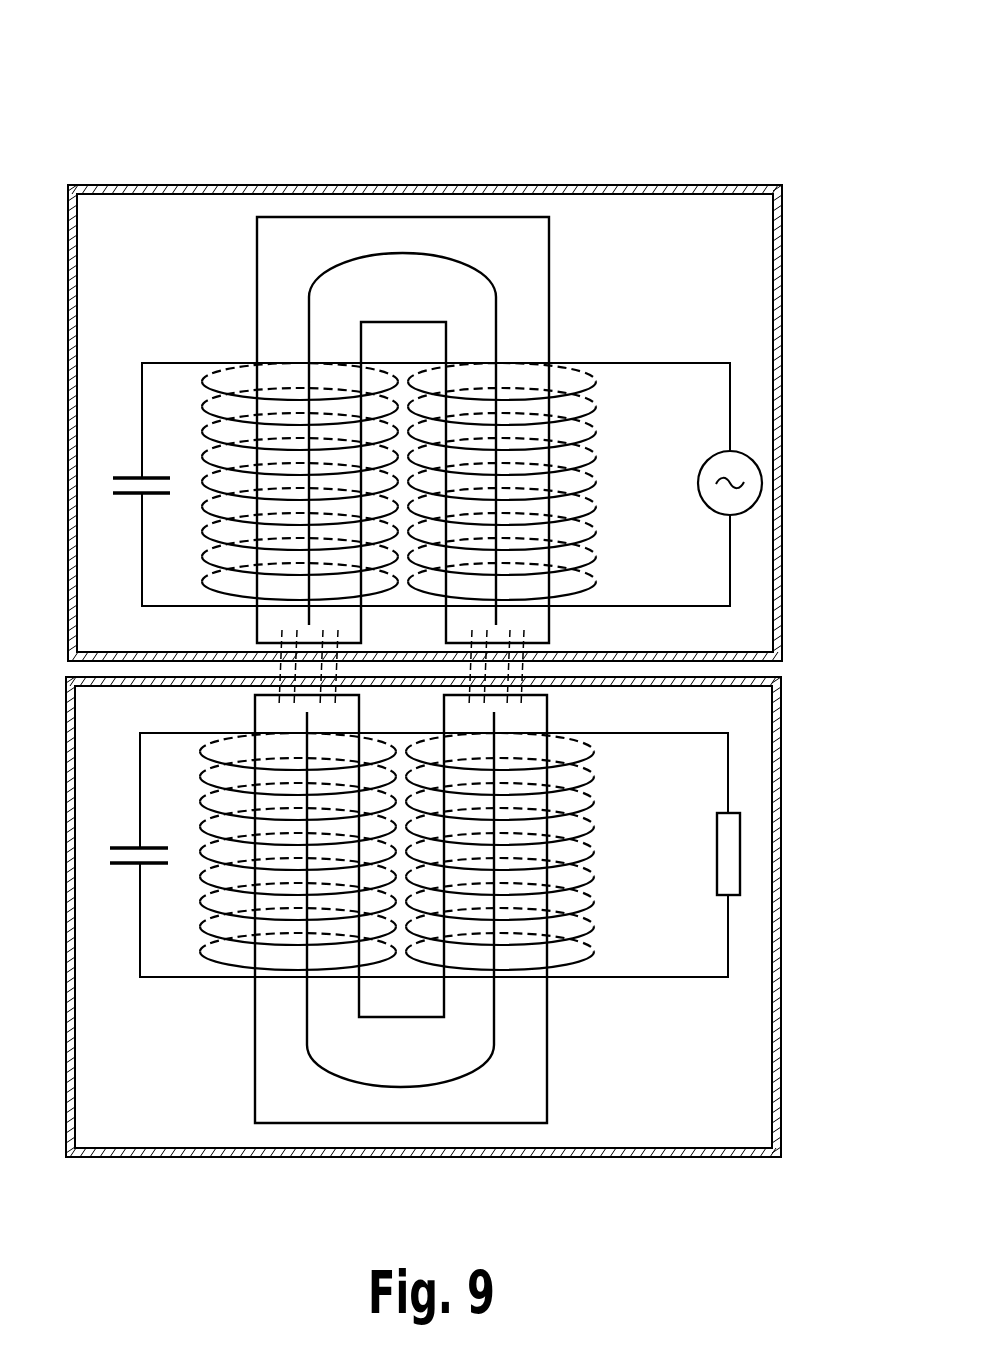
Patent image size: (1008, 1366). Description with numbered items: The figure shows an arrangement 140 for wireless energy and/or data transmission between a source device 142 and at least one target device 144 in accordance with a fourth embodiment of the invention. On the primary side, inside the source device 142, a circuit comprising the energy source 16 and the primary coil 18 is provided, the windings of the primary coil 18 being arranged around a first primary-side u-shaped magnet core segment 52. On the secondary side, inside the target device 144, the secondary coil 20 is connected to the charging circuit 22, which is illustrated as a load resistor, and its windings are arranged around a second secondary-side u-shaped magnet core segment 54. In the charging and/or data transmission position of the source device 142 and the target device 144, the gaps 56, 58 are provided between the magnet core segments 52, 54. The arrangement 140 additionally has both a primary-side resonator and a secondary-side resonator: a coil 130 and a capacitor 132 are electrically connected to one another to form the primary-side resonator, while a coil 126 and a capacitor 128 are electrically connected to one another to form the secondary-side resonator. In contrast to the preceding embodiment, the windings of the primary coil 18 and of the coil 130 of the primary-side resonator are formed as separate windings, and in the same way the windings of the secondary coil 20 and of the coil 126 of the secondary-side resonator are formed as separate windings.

The arrangement 140 is at (602, 62).
The source device 142 is at (783, 297).
The target device 144 is at (781, 724).
The first primary-side u-shaped magnet core segment 52 is at (523, 259).
The second secondary-side u-shaped magnet core segment 54 is at (520, 717).
The gap 56 is at (236, 669).
The gap 58 is at (565, 669).
The energy source 16 is at (753, 488).
The primary coil 18 is at (592, 497).
The secondary coil 20 is at (595, 865).
The charging circuit 22 is at (727, 853).
The coil 130 is at (204, 470).
The capacitor 132 is at (130, 496).
The coil 126 is at (204, 838).
The capacitor 128 is at (130, 866).